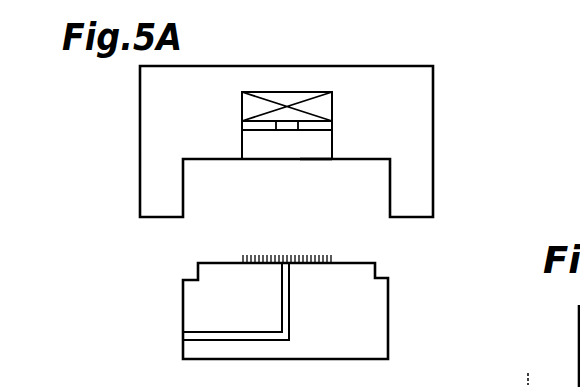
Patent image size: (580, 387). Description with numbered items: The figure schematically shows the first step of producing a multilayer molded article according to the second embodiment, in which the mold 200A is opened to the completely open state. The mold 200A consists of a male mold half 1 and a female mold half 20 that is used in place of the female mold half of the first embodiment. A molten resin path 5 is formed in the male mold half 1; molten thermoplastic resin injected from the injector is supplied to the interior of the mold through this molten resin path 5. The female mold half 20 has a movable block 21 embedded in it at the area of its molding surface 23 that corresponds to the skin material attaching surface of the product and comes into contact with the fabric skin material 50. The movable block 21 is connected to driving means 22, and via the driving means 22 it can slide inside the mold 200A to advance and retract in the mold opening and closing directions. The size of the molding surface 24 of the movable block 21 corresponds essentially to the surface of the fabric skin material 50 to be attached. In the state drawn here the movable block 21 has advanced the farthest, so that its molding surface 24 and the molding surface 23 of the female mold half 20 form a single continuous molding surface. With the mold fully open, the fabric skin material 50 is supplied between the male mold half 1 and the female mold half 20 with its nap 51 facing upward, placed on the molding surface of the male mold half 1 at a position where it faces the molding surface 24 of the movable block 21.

In FIG. 5A, the mold 200A is at (315, 131).
In FIG. 5A, the female mold half 20 is at (420, 167).
In FIG. 5A, the driving means 22 is at (250, 108).
In FIG. 5B, the driving means 22 is at (578, 318).
In FIG. 5A, the movable block 21 is at (281, 150).
In FIG. 5B, the movable block 21 is at (579, 350).
In FIG. 5A, the molding surface of the movable block 24 is at (305, 162).
In FIG. 5A, the molding surface of the female mold half 23 is at (212, 162).
In FIG. 5A, the male mold half 1 is at (379, 325).
In FIG. 5A, the molten resin path 5 is at (230, 342).
In FIG. 5A, the fabric skin material 50 is at (333, 261).
In FIG. 5A, the nap 51 is at (279, 244).